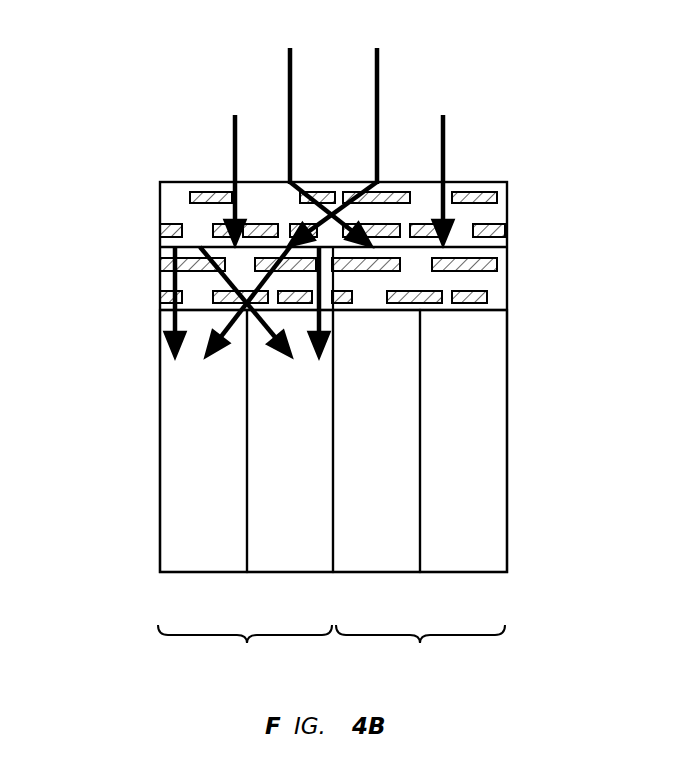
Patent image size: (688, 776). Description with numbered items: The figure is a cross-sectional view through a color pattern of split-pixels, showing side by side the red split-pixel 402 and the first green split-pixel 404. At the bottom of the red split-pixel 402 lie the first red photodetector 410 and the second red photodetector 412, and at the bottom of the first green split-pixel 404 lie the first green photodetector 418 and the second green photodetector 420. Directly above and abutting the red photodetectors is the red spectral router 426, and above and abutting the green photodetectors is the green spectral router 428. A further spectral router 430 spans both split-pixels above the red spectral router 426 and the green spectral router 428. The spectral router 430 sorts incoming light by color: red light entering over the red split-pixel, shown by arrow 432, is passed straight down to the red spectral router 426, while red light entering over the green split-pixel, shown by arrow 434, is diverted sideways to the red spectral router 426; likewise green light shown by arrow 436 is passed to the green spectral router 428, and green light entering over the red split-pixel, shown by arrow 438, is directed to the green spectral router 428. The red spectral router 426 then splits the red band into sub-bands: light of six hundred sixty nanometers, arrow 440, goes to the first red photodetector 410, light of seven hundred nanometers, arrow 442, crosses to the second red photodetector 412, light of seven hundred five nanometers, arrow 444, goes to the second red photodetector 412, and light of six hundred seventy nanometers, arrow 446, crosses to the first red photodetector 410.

The red split-pixel 402 is at (245, 651).
The first green split-pixel 404 is at (420, 652).
The first red photodetector 410 is at (188, 459).
The second red photodetector 412 is at (273, 552).
The first green photodetector 418 is at (387, 550).
The second green photodetector 420 is at (490, 458).
The red spectral router 426 is at (165, 251).
The green spectral router 428 is at (502, 252).
The spectral router 430 is at (177, 212).
The arrow 432 is at (233, 140).
The arrow 434 is at (380, 75).
The arrow 436 is at (447, 128).
The arrow 438 is at (287, 78).
The arrow 440 is at (170, 278).
The arrow 442 is at (257, 332).
The arrow 444 is at (321, 283).
The arrow 446 is at (238, 333).